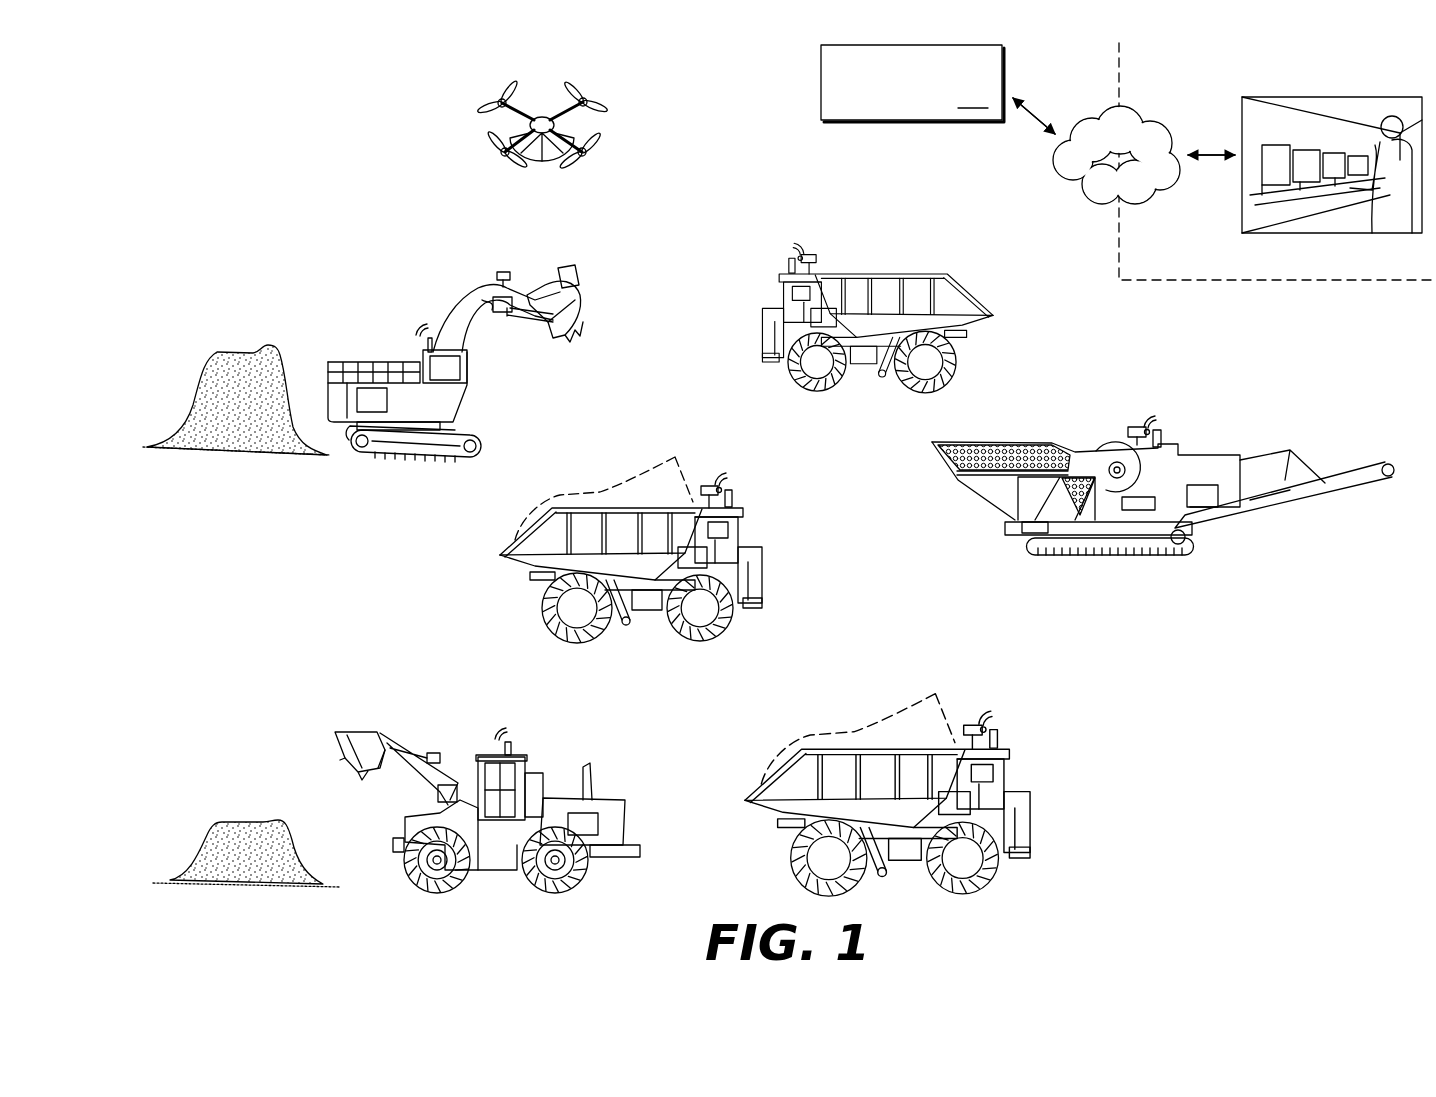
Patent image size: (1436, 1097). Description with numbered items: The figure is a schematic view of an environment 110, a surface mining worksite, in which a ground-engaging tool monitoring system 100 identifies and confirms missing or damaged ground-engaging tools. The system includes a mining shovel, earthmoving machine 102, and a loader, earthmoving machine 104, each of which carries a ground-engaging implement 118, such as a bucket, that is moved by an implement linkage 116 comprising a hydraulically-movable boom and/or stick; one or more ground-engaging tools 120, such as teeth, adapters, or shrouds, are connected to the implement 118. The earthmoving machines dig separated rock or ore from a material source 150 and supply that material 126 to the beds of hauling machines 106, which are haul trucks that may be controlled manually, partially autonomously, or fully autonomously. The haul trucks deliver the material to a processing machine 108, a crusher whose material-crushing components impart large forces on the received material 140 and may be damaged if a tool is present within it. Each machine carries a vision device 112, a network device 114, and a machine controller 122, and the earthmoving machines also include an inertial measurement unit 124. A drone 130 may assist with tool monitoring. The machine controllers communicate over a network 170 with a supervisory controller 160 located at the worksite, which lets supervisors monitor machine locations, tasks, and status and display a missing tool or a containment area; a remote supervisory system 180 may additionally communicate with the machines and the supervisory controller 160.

The ground-engaging tool monitoring system 100 is at (350, 193).
The earthmoving machine 102 is at (383, 302).
The earthmoving machine 104 is at (322, 753).
The hauling machine 106 is at (1007, 313).
The processing machine 108 is at (985, 522).
The environment 110 is at (237, 248).
The vision device 112 is at (510, 271).
The network device 114 is at (418, 345).
The implement linkage 116 is at (540, 322).
The ground-engaging implement 118 is at (568, 307).
The ground-engaging tool 120 is at (578, 282).
The machine controller 122 is at (372, 414).
The inertial measurement unit 124 is at (503, 313).
The material 126 is at (634, 480).
The drone 130 is at (542, 120).
The received material 140 is at (1018, 447).
The material source 150 is at (240, 453).
The supervisory controller 160 is at (938, 89).
The network 170 is at (1058, 168).
The remote supervisory system 180 is at (1242, 213).